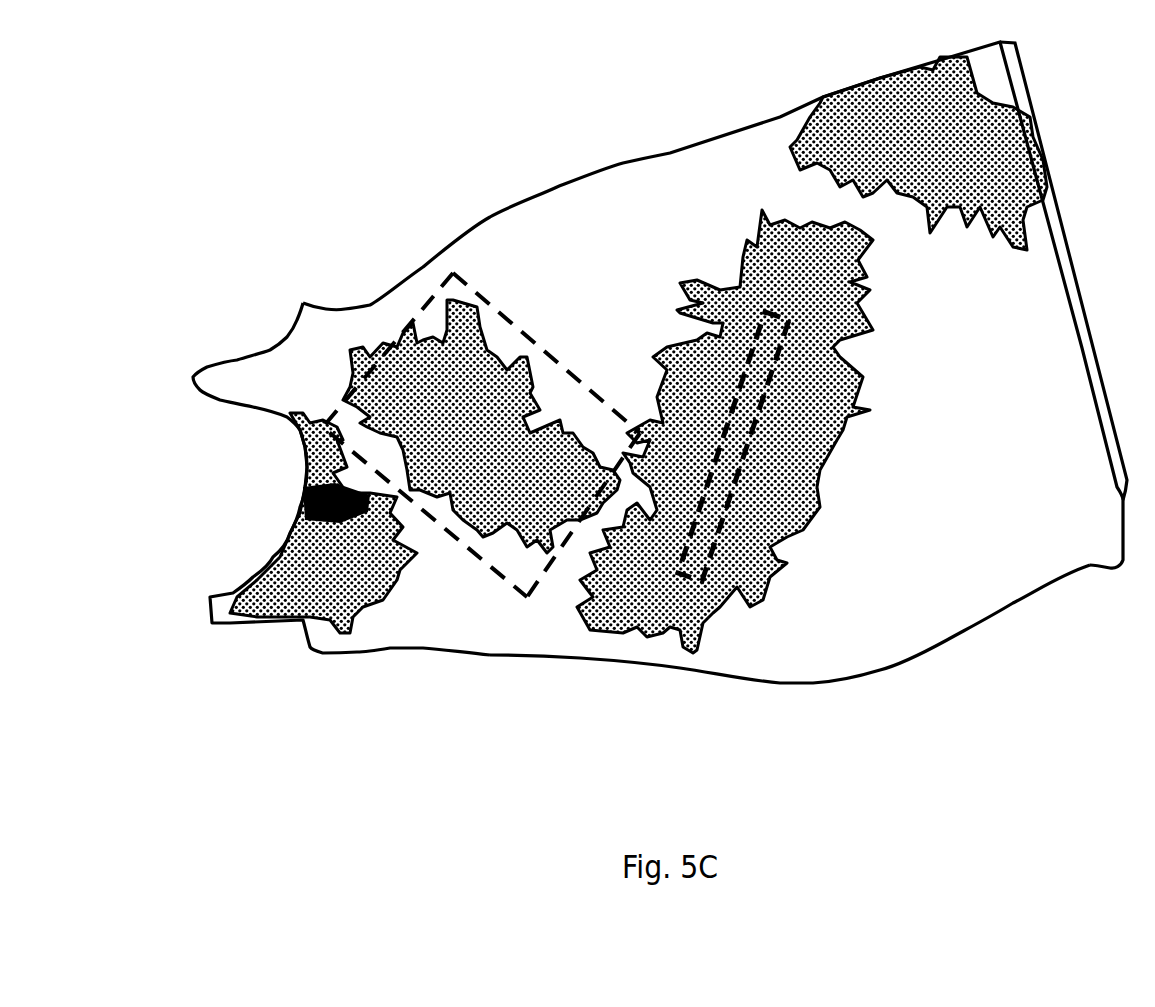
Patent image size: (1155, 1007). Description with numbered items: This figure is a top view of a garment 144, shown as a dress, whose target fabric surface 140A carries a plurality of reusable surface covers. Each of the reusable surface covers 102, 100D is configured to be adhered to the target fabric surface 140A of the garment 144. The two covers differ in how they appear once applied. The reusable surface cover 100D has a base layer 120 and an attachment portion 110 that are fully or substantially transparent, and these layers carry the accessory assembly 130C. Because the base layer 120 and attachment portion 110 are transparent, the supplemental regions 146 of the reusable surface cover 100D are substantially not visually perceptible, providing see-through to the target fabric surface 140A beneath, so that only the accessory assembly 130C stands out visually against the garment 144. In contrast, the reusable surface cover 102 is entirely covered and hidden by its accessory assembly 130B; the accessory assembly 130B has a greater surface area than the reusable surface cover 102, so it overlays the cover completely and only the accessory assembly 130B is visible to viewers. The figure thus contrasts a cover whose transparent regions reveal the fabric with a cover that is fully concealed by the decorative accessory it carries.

The garment 144 is at (290, 118).
The target fabric surface 140A is at (952, 563).
The accessory assembly 130B is at (762, 208).
The accessory assembly 130C is at (357, 372).
The reusable surface cover 100D is at (510, 317).
The supplemental regions 146 is at (562, 393).
The base layer 120 is at (528, 530).
The attachment portion 110 is at (498, 550).
The reusable surface cover 102 is at (777, 377).